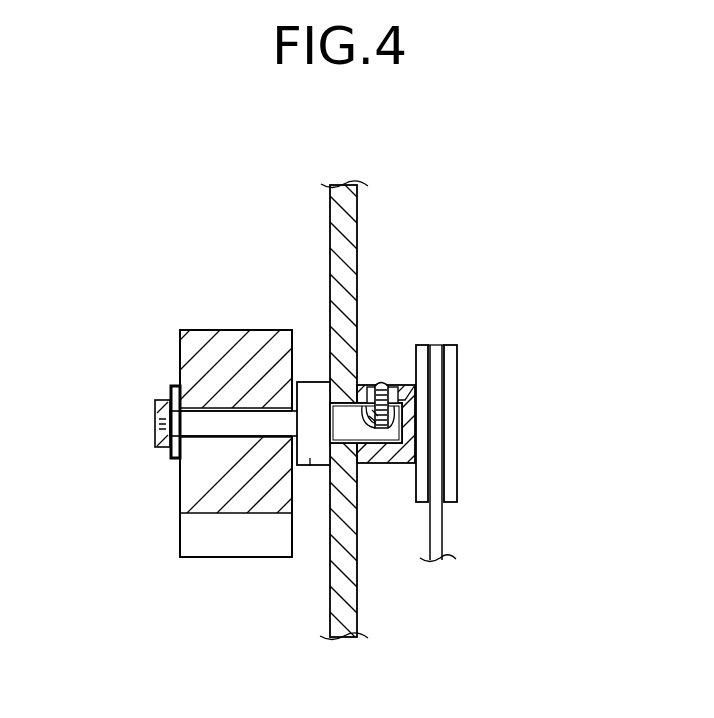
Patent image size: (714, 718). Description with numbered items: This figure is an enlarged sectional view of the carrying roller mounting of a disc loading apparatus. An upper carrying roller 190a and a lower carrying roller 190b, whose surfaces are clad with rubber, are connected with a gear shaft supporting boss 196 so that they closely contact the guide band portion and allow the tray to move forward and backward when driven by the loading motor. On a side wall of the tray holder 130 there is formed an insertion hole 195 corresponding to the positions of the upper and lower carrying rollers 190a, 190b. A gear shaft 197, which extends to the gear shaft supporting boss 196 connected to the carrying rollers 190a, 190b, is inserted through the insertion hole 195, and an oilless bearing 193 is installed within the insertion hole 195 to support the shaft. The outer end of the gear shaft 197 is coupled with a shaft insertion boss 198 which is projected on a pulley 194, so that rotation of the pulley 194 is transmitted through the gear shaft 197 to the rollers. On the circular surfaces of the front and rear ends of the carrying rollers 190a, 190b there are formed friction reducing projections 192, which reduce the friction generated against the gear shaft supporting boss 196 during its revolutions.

The tray holder 130 is at (331, 238).
The upper carrying roller 190a is at (218, 340).
The lower carrying roller 190b is at (200, 543).
The friction reducing projections 192 is at (312, 382).
The oilless bearing 193 is at (347, 473).
The pulley 194 is at (458, 430).
The insertion hole 195 is at (358, 452).
The gear shaft supporting boss 196 is at (310, 466).
The gear shaft 197 is at (222, 427).
The shaft insertion boss 198 is at (400, 385).